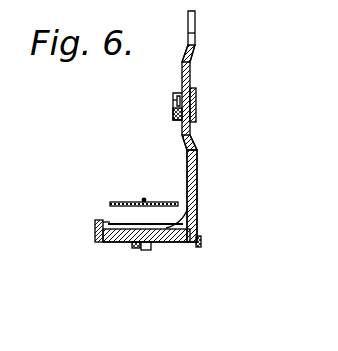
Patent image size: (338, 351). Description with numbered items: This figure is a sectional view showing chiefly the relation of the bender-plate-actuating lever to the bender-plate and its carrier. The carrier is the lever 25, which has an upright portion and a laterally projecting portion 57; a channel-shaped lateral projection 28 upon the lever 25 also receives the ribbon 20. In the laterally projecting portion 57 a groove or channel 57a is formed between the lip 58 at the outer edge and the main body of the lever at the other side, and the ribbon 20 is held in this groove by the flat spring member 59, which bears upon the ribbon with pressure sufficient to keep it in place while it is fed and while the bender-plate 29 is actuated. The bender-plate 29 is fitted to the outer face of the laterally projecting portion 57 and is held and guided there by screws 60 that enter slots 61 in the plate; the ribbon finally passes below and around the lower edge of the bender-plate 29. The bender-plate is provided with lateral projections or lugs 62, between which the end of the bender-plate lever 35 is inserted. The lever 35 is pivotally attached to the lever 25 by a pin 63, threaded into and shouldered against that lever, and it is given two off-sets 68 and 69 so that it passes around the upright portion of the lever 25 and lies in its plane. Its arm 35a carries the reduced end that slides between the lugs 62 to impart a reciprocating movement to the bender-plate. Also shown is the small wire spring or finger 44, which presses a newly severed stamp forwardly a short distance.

The bender-plate lever 35 is at (195, 50).
The off-set 69 is at (184, 57).
The off-set 68 is at (195, 141).
The arm of the bender-plate lever 35a is at (198, 170).
The lever 25 is at (196, 93).
The pin 63 is at (173, 100).
The channel-shaped lateral projection 28 is at (96, 233).
The bender plate 29 is at (103, 243).
The lip 58 is at (95, 225).
The laterally projecting portion 57 is at (100, 220).
The ribbon 20 is at (158, 222).
The flat spring member 59 is at (128, 202).
The wire spring or finger 44 is at (144, 198).
The groove or channel 57a is at (197, 205).
The slots 61 is at (134, 247).
The screws 60 is at (148, 249).
The lateral projections or lugs 62 is at (201, 240).